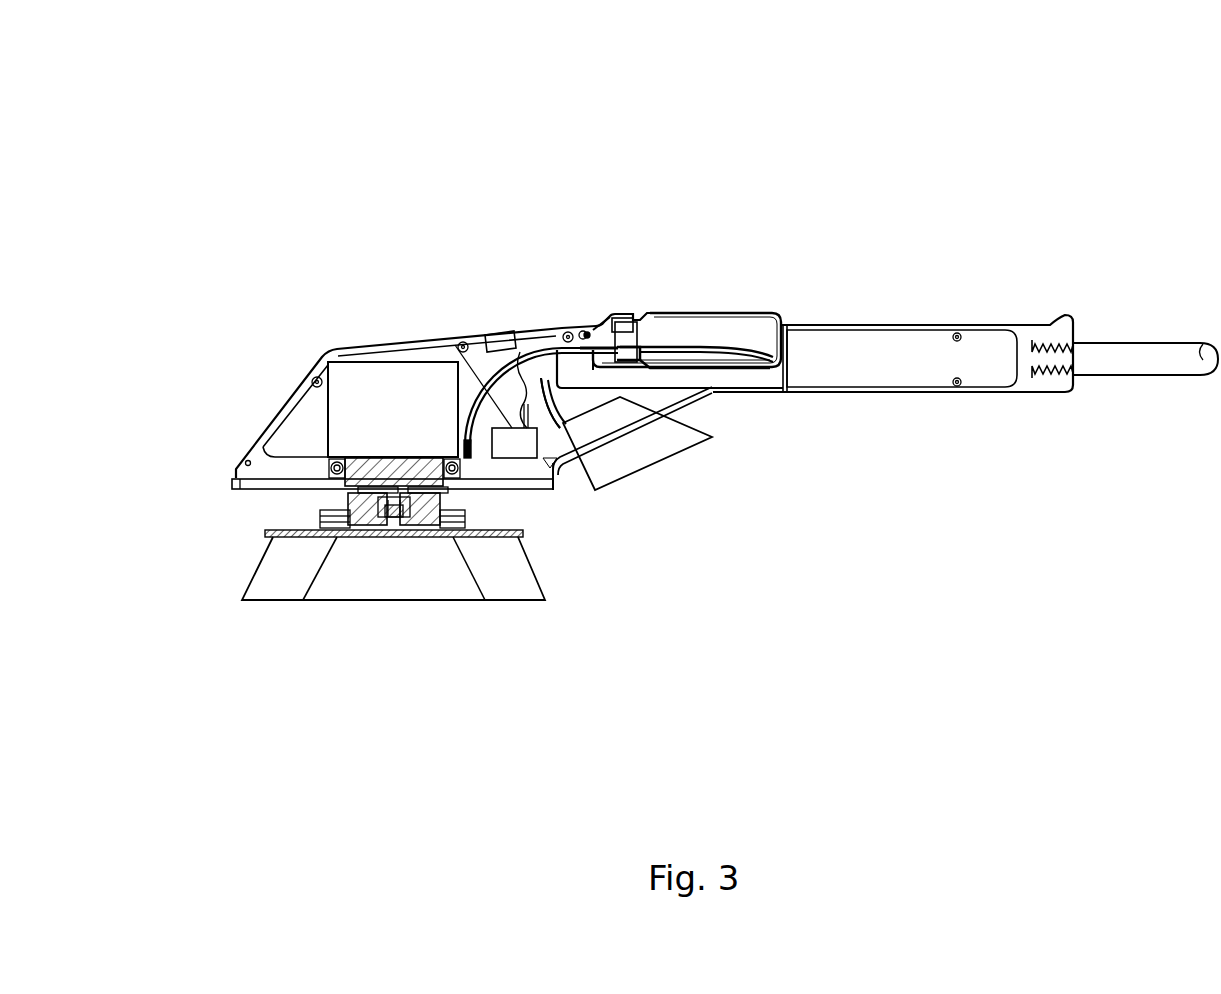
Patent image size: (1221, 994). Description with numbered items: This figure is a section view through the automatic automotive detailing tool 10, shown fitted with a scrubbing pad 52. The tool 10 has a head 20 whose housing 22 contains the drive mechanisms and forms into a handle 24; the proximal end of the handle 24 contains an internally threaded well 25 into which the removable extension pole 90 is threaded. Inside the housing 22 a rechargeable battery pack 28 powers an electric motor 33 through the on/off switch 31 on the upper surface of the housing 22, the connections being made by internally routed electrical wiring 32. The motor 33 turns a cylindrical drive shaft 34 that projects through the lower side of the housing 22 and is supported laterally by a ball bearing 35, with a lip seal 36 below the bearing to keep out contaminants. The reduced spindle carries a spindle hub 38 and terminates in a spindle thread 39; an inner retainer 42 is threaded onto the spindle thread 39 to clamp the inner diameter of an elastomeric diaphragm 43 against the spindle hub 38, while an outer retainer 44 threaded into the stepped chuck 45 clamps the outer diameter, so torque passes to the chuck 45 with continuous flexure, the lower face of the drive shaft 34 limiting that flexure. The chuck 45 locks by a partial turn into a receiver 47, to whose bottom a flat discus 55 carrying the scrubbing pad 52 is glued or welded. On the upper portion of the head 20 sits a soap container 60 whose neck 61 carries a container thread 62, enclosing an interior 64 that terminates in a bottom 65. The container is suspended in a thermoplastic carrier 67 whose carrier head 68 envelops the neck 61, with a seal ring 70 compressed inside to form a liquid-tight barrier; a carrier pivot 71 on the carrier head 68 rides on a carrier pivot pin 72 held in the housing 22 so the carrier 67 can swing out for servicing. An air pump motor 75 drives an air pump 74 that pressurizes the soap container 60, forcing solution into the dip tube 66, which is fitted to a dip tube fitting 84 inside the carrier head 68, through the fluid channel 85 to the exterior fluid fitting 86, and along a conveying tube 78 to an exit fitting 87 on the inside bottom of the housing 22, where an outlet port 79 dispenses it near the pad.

The automatic automotive detailing tool 10 is at (233, 165).
The head 20 is at (246, 433).
The housing 22 is at (323, 368).
The handle 24 is at (913, 327).
The internally threaded well 25 is at (1043, 344).
The rechargeable battery pack 28 is at (661, 445).
The on/off switch 31 is at (485, 334).
The electrical wiring 32 is at (466, 341).
The motor 33 is at (376, 376).
The drive shaft 34 is at (345, 461).
The ball bearing 35 is at (340, 467).
The lip seal 36 is at (342, 480).
The spindle hub 38 is at (342, 537).
The spindle thread 39 is at (398, 517).
The inner retainer 42 is at (416, 522).
The diaphragm 43 is at (430, 537).
The outer retainer 44 is at (352, 497).
The chuck 45 is at (295, 537).
The receiver 47 is at (333, 525).
The scrubbing pad 52 is at (525, 590).
The discus 55 is at (517, 538).
The soap container 60 is at (742, 314).
The neck 61 is at (637, 330).
The container thread 62 is at (620, 327).
The interior 64 is at (704, 330).
The bottom 65 is at (783, 324).
The dip tube 66 is at (765, 331).
The carrier 67 is at (732, 372).
The carrier head 68 is at (594, 331).
The seal ring 70 is at (615, 332).
The carrier pivot 71 is at (589, 331).
The carrier pivot pin 72 is at (590, 332).
The air pump 74 is at (562, 468).
The air pump motor 75 is at (550, 403).
The conveying tube 78 is at (543, 343).
The outlet port 79 is at (472, 470).
The dip tube fitting 84 is at (628, 332).
The fluid channel 85 is at (599, 332).
The exterior fluid fitting 86 is at (583, 333).
The exit fitting 87 is at (556, 489).
The extension pole 90 is at (1121, 381).